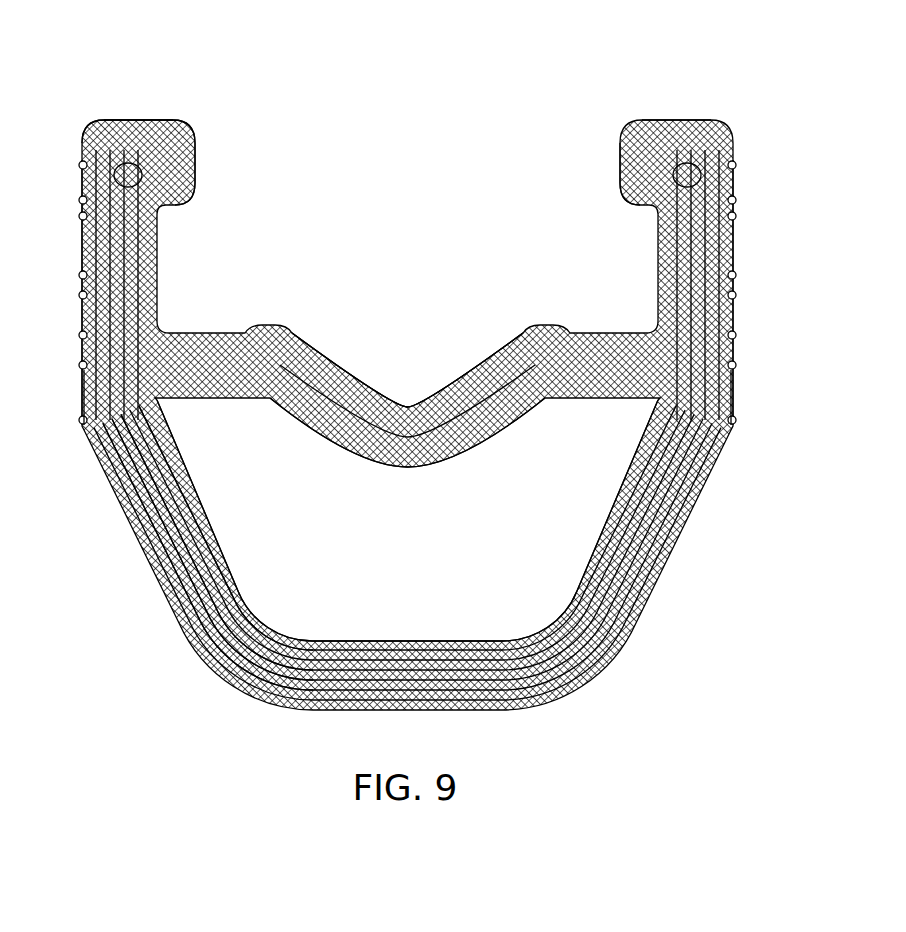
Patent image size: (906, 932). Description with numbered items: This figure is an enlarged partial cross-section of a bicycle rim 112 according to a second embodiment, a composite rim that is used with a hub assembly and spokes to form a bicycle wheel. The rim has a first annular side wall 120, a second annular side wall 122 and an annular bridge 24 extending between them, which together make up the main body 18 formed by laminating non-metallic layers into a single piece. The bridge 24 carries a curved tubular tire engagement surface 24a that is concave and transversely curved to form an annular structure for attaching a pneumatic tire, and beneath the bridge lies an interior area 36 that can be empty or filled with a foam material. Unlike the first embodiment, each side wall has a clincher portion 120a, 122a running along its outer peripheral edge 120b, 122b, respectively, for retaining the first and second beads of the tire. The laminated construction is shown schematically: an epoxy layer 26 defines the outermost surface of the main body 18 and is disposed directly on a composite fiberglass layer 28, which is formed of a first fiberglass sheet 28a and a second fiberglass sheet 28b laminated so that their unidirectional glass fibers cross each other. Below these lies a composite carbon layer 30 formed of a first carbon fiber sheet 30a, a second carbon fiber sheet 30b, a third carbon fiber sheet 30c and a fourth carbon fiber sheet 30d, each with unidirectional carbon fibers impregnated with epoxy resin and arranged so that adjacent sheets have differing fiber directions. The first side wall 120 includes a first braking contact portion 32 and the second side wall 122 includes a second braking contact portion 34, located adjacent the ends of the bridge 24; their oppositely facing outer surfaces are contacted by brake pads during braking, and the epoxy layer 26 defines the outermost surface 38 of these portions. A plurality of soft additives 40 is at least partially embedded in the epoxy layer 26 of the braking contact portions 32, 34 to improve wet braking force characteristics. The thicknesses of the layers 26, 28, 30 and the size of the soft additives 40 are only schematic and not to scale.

The main body 18 is at (755, 508).
The annular bridge 24 is at (497, 450).
The curved tubular tire engagement surface 24a is at (423, 399).
The epoxy layer 26 is at (122, 514).
The composite fiberglass layer 28 is at (67, 543).
The first fiberglass sheet 28a is at (148, 549).
The second fiberglass sheet 28b is at (162, 572).
The composite carbon layer 30 is at (67, 603).
The first carbon fiber sheet 30a is at (175, 606).
The second carbon fiber sheet 30b is at (199, 627).
The third carbon fiber sheet 30c is at (227, 653).
The fourth carbon fiber sheet 30d is at (253, 677).
The first braking contact portion 32 is at (62, 153).
The second braking contact portion 34 is at (753, 153).
The area 36 is at (421, 537).
The outermost surface 38 is at (83, 157).
The soft additives 40 is at (94, 420).
The bicycle rim 112 is at (105, 78).
The first annular side wall 120 is at (217, 555).
The clincher portion 120a is at (198, 162).
The outer peripheral edge 120b is at (148, 118).
The second annular side wall 122 is at (687, 543).
The clincher portion 122a is at (618, 160).
The outer peripheral edge 122b is at (683, 117).